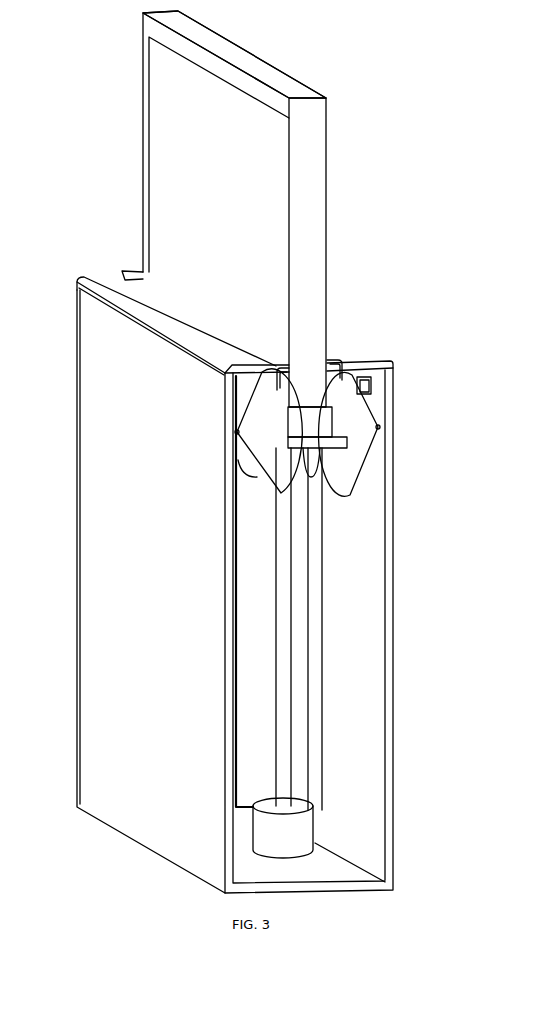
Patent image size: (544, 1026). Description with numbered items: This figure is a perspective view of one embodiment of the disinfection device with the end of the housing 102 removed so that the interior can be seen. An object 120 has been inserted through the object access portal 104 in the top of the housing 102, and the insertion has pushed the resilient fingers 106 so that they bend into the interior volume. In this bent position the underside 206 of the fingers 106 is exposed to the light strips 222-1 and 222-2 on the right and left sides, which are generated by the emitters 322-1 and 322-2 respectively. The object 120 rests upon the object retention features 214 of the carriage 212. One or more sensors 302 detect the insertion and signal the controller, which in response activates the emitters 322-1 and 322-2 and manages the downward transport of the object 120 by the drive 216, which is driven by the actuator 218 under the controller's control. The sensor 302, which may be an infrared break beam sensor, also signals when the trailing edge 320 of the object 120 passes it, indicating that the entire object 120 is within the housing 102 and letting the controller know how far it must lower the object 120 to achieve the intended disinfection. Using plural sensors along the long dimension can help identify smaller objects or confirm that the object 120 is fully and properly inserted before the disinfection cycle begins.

The housing 102 is at (393, 475).
The object access portal 104 is at (133, 273).
The resilient fingers 106 is at (327, 358).
The object 120 is at (317, 214).
The underside of the fingers 206 is at (367, 387).
The carriage 212 is at (328, 443).
The object retention features 214 is at (308, 418).
The drive 216 is at (287, 683).
The actuator 218 is at (310, 834).
The light strip 222-1 is at (365, 440).
The light strip 222-2 is at (257, 425).
The sensor 302 is at (327, 323).
The trailing edge 320 is at (238, 53).
The emitter 322-1 is at (378, 428).
The emitter 322-2 is at (237, 432).